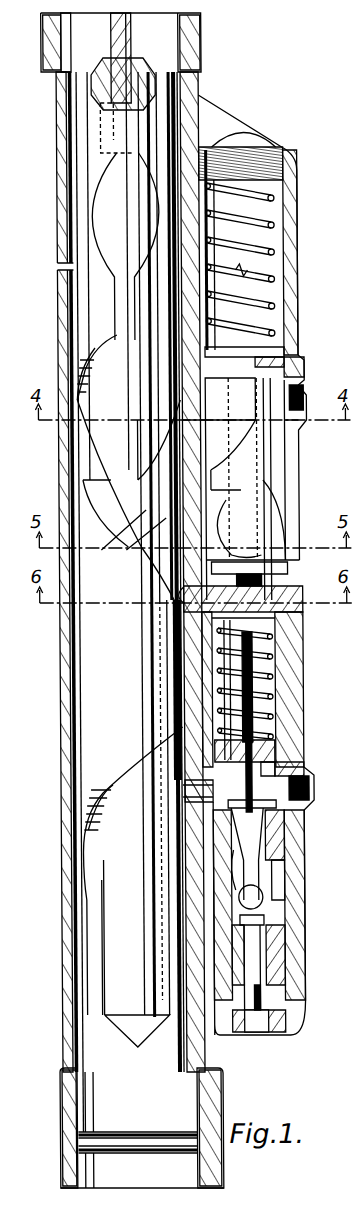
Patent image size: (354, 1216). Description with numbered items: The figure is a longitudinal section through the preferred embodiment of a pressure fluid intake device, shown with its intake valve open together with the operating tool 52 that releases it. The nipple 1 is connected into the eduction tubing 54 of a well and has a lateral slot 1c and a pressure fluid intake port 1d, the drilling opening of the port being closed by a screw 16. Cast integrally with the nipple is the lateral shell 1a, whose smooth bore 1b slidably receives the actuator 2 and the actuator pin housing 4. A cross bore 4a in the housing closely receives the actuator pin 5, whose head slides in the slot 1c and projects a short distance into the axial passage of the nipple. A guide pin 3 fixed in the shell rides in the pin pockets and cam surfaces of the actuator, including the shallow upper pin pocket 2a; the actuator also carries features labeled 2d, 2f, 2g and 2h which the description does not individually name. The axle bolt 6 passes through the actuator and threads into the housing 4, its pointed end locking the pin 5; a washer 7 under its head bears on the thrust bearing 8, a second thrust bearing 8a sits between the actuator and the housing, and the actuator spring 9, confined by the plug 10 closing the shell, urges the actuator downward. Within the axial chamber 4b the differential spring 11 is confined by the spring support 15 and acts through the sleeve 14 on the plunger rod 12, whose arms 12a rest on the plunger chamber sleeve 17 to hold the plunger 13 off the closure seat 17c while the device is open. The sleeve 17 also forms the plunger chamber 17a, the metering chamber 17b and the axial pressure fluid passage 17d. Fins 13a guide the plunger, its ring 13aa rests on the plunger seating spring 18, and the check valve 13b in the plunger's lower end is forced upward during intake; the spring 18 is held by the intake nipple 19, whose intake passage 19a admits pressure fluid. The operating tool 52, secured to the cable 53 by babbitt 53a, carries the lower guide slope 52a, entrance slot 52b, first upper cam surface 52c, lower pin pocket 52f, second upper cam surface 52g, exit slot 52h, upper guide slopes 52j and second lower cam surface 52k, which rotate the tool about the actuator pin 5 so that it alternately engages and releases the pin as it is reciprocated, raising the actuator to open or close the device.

The nipple 1 is at (186, 78).
The lateral shell 1a is at (288, 218).
The smooth bore 1b is at (272, 188).
The lateral slot 1c is at (215, 472).
The pressure fluid intake port 1d is at (195, 795).
The actuator 2 is at (210, 447).
The shallow upper pin pocket 2a is at (206, 418).
The valve body flange 2d is at (272, 557).
The valve body port 2f is at (216, 485).
The valve body passage 2g is at (212, 522).
The valve body wall 2h is at (267, 502).
The guide pin 3 is at (303, 398).
The actuator pin housing 4 is at (278, 648).
The cross bore 4a is at (292, 621).
The axial chamber 4b is at (270, 677).
The actuator pin 5 is at (180, 587).
The axle bolt 6 is at (245, 351).
The washer 7 is at (268, 363).
The thrust bearing 8 is at (284, 373).
The thrust bearing 8a is at (286, 571).
The actuator spring 9 is at (248, 273).
The plug 10 is at (247, 135).
The differential spring 11 is at (290, 705).
The plunger rod 12 is at (273, 733).
The arms 12a is at (270, 805).
The plunger 13 is at (259, 900).
The fins 13a is at (281, 940).
The ring 13aa is at (225, 943).
The check valve 13b is at (260, 923).
The sleeve 14 is at (285, 753).
The spring support 15 is at (292, 768).
The screw 16 is at (306, 783).
The plunger chamber sleeve 17 is at (285, 1008).
The plunger chamber 17a is at (270, 873).
The metering chamber 17b is at (262, 858).
The closure seat 17c is at (290, 840).
The axial pressure fluid passage 17d is at (255, 825).
The plunger seating spring 18 is at (262, 957).
The intake nipple 19 is at (286, 1030).
The intake passage 19a is at (257, 1005).
The operating tool 52 is at (83, 297).
The lower guide slope 52a is at (103, 818).
The entrance slot 52b is at (133, 540).
The first upper helically inclined cam surface 52c is at (165, 447).
The lower pin pocket 52f is at (80, 621).
The second upper helically inclined cam surface 52g is at (85, 398).
The exit slot 52h is at (118, 325).
The upper guide slopes 52j is at (165, 213).
The second lower helically inclined cam surface 52k is at (130, 486).
The cable 53 is at (133, 27).
The lead, solder or babbitt 53a is at (148, 68).
The eduction tubing 54 is at (197, 30).